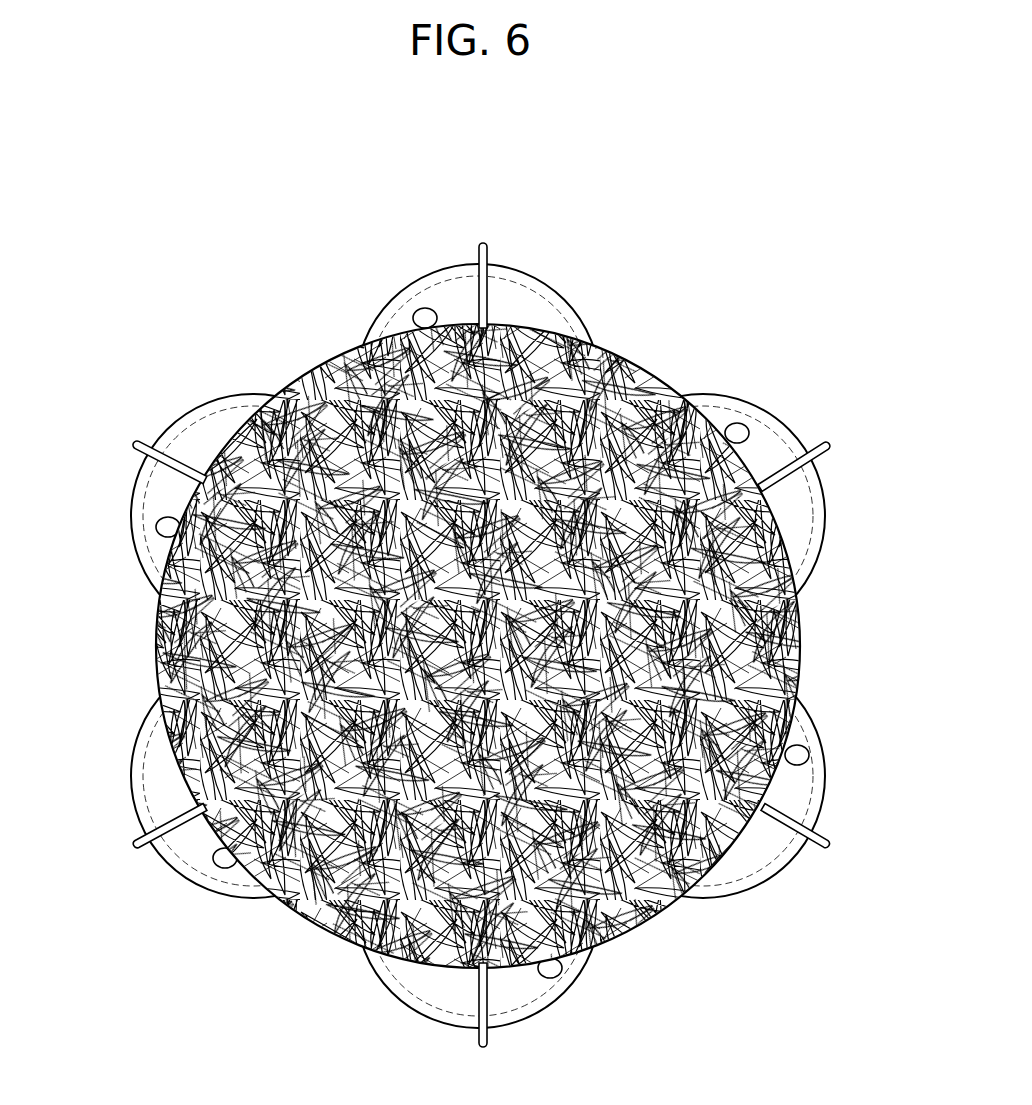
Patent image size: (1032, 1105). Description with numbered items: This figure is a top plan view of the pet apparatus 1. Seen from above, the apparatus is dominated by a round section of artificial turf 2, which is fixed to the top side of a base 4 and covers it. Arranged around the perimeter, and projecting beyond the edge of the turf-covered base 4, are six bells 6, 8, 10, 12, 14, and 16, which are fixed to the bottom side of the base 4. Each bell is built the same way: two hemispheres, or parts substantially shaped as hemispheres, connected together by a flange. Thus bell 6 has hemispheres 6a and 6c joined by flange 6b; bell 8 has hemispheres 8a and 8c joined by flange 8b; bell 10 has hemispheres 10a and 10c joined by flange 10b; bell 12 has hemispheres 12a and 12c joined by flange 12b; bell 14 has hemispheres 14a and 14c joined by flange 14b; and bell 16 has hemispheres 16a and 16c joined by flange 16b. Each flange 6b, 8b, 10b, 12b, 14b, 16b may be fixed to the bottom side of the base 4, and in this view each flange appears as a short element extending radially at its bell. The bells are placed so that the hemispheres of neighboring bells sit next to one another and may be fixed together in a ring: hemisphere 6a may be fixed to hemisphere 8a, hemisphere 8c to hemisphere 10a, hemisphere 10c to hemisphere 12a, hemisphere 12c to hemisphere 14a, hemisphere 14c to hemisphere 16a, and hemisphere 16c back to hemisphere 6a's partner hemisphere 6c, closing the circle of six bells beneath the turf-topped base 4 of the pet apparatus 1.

The pet apparatus 1 is at (662, 240).
The section of artificial turf 2 is at (370, 453).
The base 4 is at (293, 393).
The bell 6 is at (178, 847).
The hemisphere 6a is at (145, 783).
The flange 6b is at (135, 843).
The hemisphere 6c is at (187, 842).
The bell 8 is at (398, 978).
The hemisphere 8a is at (437, 1000).
The flange 8b is at (487, 1045).
The hemisphere 8c is at (500, 1000).
The bell 10 is at (787, 863).
The hemisphere 10a is at (726, 865).
The flange 10b is at (832, 846).
The hemisphere 10c is at (782, 800).
The bell 12 is at (740, 410).
The hemisphere 12a is at (780, 502).
The flange 12b is at (833, 447).
The hemisphere 12c is at (752, 466).
The bell 14 is at (403, 293).
The hemisphere 14a is at (516, 315).
The flange 14b is at (487, 262).
The hemisphere 14c is at (431, 297).
The bell 16 is at (190, 413).
The hemisphere 16a is at (203, 427).
The flange 16b is at (136, 449).
The hemisphere 16c is at (152, 525).